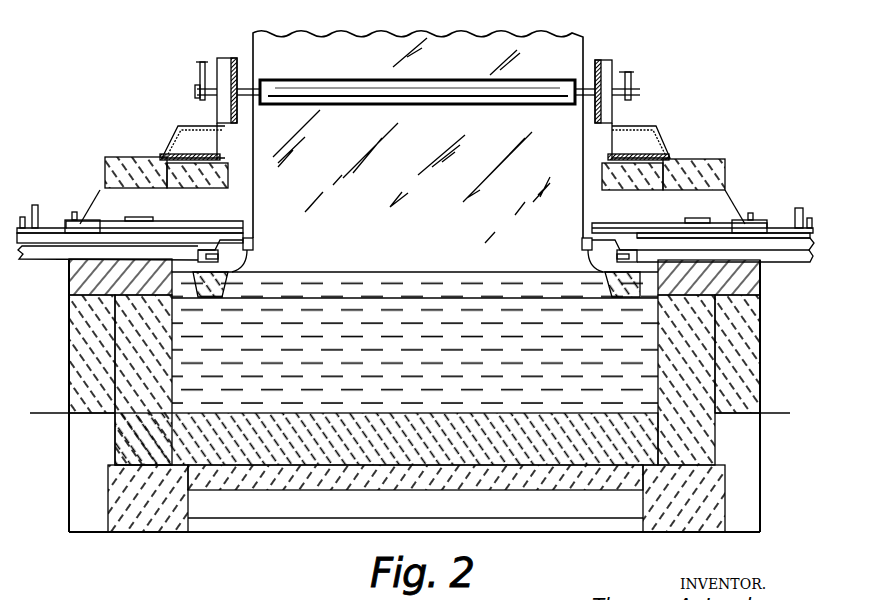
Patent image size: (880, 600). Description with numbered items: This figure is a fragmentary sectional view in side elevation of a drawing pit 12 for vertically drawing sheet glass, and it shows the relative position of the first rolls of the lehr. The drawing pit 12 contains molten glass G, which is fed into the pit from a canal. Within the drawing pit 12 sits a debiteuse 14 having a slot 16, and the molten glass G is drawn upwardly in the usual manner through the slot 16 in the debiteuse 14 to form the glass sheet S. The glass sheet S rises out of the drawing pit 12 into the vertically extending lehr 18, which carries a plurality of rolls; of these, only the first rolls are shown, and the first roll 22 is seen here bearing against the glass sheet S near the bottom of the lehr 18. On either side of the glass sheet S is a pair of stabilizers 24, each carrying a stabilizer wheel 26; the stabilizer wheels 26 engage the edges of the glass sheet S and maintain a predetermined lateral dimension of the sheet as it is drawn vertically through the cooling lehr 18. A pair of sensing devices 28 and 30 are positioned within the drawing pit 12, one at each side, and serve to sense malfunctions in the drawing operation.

The glass sheet S is at (310, 30).
The molten glass G is at (446, 344).
The drawing pit 12 is at (593, 148).
The debiteuse 14 is at (627, 298).
The slot 16 is at (348, 280).
The lehr 18 is at (588, 62).
The first roll 22 is at (521, 80).
The stabilizer 24 is at (206, 222).
The stabilizer wheel 26 is at (258, 244).
The sensing device 28 is at (806, 262).
The sensing device 30 is at (60, 258).